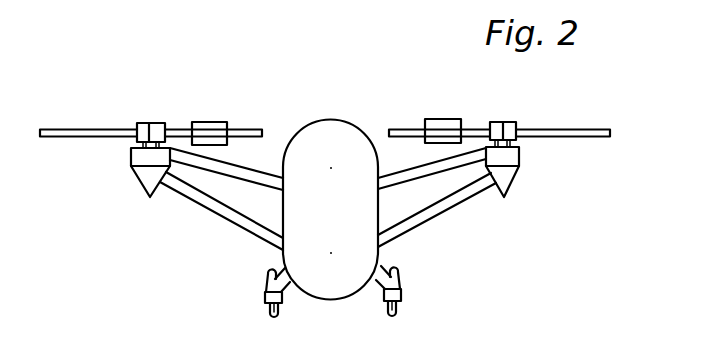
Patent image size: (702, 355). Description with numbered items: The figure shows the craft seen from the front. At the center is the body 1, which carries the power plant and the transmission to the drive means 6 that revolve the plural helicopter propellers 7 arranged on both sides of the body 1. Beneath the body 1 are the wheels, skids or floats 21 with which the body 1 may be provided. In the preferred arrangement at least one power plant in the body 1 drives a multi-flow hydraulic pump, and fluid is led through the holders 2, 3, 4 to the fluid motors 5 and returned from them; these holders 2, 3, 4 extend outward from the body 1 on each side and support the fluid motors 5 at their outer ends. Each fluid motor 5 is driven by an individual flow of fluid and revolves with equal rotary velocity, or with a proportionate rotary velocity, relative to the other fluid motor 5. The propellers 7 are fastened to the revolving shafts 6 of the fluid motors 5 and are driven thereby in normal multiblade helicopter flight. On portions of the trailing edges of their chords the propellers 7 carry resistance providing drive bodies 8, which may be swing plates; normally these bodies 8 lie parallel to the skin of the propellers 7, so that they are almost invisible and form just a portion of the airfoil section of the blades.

The body 1 is at (338, 230).
The holder 2 is at (328, 180).
The holder 3 is at (228, 217).
The holder 4 is at (226, 169).
The fluid motor 5 is at (150, 156).
The drive means 6 is at (148, 123).
The helicopter propeller 7 is at (82, 129).
The resistance providing drive body 8 is at (212, 140).
The wheels, skids or floats 21 is at (266, 308).